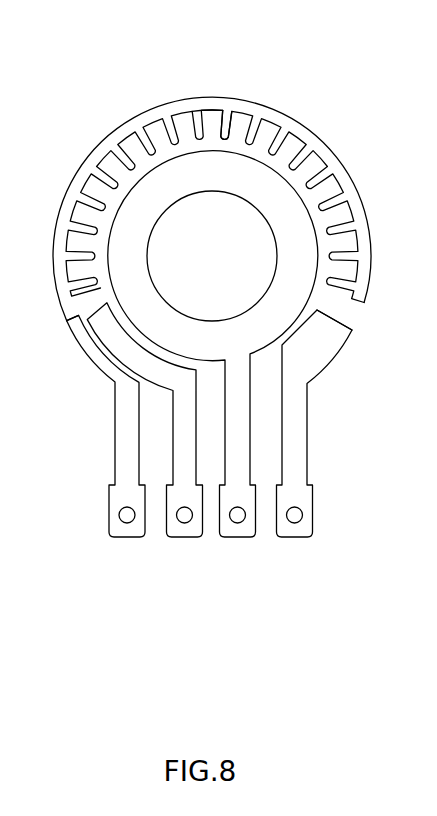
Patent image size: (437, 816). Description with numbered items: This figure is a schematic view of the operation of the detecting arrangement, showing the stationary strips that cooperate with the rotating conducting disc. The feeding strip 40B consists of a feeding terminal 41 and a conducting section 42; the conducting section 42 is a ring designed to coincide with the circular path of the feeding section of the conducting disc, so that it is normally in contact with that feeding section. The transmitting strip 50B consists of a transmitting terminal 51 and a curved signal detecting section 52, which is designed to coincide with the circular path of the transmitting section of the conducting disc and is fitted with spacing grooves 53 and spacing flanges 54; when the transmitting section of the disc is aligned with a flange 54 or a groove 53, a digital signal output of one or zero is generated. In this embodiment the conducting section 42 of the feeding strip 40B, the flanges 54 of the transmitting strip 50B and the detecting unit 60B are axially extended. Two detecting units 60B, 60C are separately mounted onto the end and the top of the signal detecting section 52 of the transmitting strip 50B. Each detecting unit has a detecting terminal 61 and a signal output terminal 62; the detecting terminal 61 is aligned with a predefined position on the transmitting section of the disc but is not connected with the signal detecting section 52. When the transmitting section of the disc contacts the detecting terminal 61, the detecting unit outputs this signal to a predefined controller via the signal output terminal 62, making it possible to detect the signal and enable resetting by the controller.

The feeding strip 40B is at (134, 163).
The feeding terminal 41 is at (222, 540).
The conducting section 42 is at (277, 262).
The transmitting strip 50B is at (100, 383).
The transmitting terminal 51 is at (145, 540).
The signal detecting section 52 is at (343, 162).
The spacing groove 53 is at (212, 122).
The spacing flange 54 is at (238, 120).
The detecting unit 60B is at (312, 405).
The detecting unit 60C is at (161, 396).
The detecting terminal 61 is at (80, 315).
The signal output terminal 62 is at (182, 540).